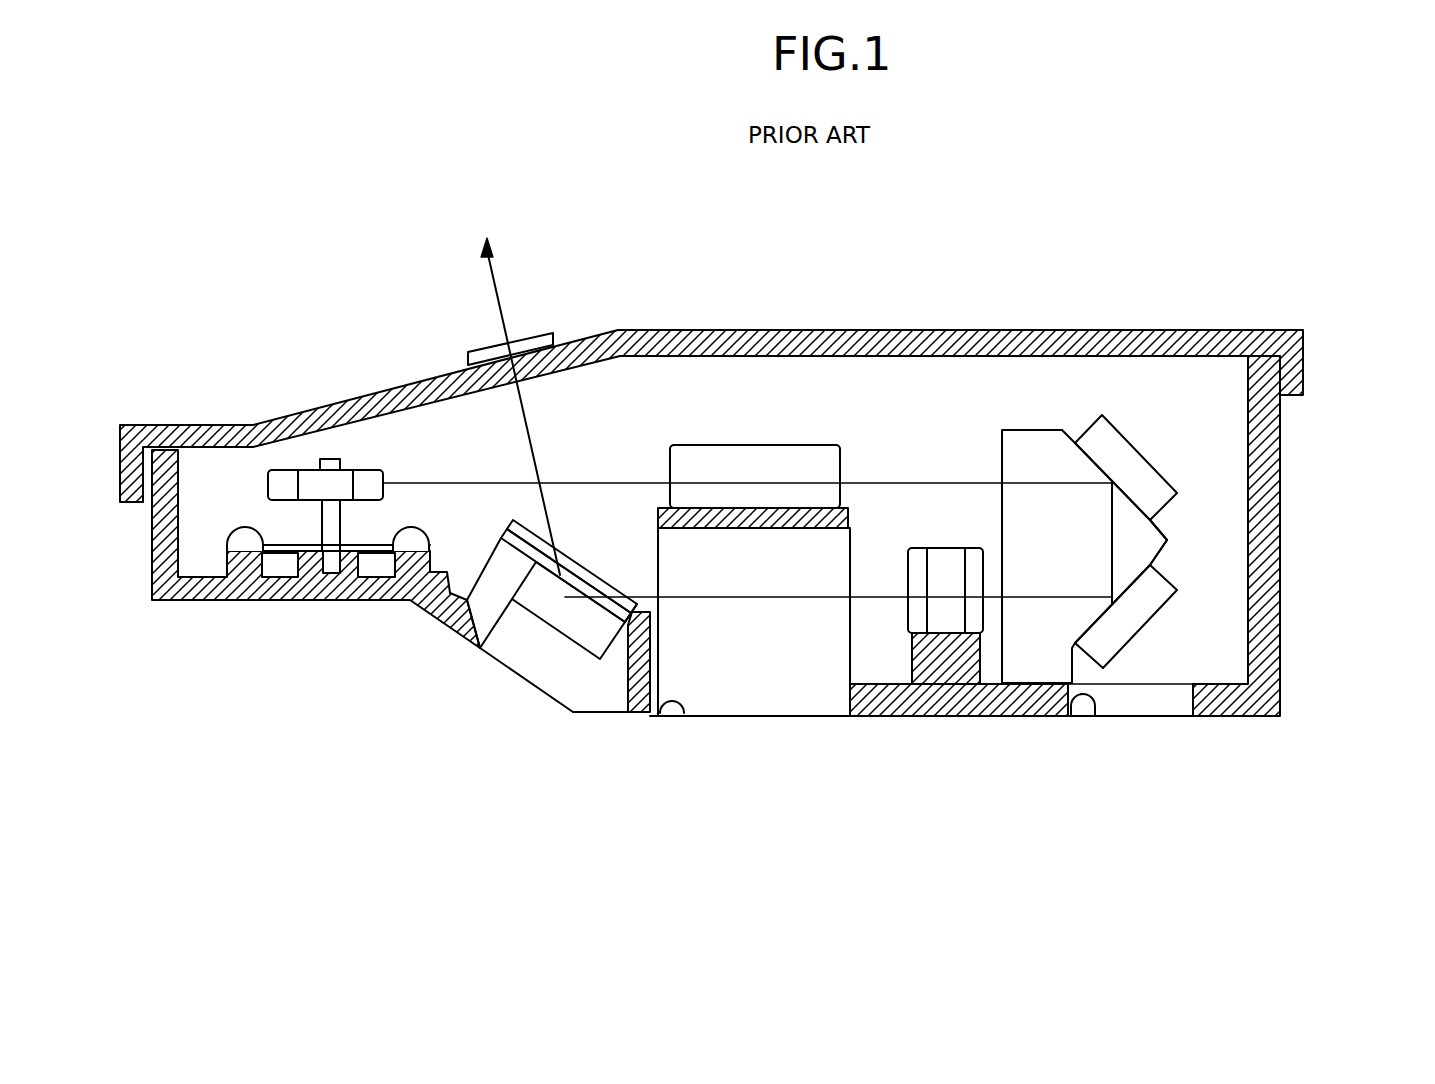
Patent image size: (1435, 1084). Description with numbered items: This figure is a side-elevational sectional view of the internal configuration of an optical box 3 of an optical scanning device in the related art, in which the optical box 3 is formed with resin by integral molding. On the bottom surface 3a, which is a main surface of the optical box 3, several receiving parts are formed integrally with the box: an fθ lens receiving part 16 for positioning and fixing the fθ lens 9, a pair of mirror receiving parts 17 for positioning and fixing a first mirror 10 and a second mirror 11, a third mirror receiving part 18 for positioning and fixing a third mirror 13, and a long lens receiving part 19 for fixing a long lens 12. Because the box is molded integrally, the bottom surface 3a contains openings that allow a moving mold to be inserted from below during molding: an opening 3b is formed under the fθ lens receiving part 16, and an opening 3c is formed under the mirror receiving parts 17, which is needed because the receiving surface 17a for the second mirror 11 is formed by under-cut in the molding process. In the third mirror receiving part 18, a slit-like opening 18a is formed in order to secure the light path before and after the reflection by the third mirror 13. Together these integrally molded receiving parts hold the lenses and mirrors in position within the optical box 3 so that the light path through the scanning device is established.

The optical box 3 is at (1297, 498).
The bottom surface 3a is at (885, 705).
The opening 3b is at (678, 705).
The opening 3c is at (1075, 694).
The fθ lens 9 is at (783, 448).
The first mirror 10 is at (1132, 450).
The second mirror 11 is at (1133, 627).
The long lens 12 is at (948, 555).
The third mirror 13 is at (590, 638).
The fθ lens receiving part 16 is at (758, 530).
The mirror receiving part 17 is at (1045, 437).
The receiving surface 17a is at (1137, 573).
The third mirror receiving part 18 is at (512, 521).
The slit-like opening 18a is at (558, 574).
The long lens receiving part 19 is at (953, 635).